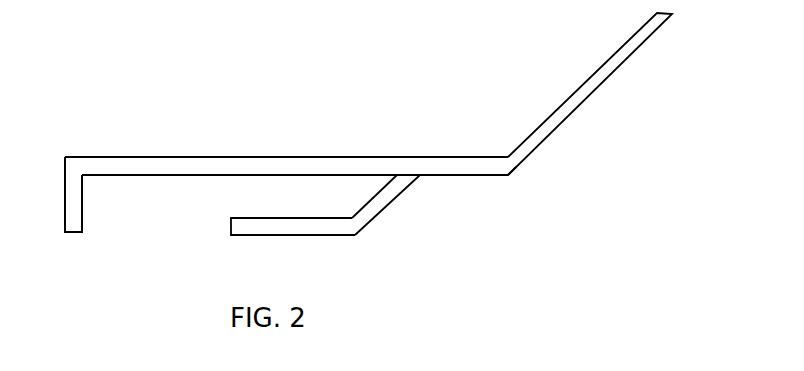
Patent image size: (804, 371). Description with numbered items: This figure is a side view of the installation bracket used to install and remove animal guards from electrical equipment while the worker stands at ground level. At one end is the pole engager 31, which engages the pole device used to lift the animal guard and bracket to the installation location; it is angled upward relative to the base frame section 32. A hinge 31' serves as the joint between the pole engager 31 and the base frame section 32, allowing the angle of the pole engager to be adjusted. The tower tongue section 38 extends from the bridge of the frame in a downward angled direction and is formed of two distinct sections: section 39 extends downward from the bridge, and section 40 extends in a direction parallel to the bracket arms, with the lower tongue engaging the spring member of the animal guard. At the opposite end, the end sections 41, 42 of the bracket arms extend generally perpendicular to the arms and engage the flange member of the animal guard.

The pole engager 31 is at (602, 94).
The hinge 31' is at (539, 203).
The base frame section 32 is at (162, 177).
The tower tongue section 38 is at (405, 193).
The tongue section 39 is at (375, 218).
The tongue section 40 is at (292, 236).
The end section 41 is at (65, 232).
The end section 42 is at (73, 194).